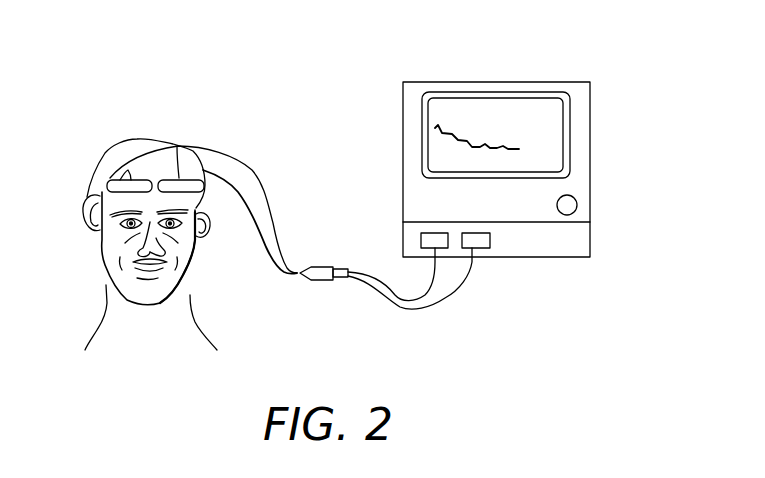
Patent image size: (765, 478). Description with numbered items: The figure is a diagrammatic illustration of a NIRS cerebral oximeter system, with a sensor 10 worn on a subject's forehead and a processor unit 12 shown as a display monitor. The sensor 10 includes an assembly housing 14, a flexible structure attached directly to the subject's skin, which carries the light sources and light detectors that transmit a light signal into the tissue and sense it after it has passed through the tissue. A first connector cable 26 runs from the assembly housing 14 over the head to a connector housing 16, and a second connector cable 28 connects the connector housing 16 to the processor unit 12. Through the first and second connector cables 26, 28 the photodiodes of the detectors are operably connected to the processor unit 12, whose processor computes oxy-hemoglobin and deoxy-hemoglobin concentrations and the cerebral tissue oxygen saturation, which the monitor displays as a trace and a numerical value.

The sensor 10 is at (204, 137).
The processor unit 12 is at (590, 82).
The assembly housing 14 is at (108, 179).
The connector housing 16 is at (315, 282).
The first connector cable 26 is at (245, 203).
The second connector cable 28 is at (440, 299).